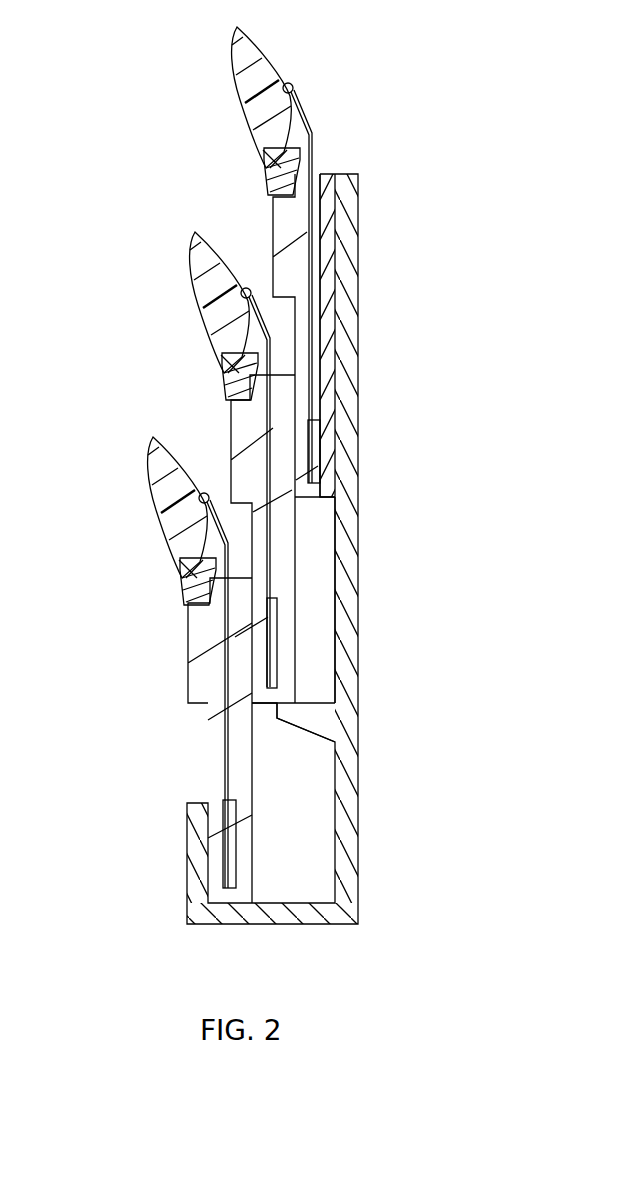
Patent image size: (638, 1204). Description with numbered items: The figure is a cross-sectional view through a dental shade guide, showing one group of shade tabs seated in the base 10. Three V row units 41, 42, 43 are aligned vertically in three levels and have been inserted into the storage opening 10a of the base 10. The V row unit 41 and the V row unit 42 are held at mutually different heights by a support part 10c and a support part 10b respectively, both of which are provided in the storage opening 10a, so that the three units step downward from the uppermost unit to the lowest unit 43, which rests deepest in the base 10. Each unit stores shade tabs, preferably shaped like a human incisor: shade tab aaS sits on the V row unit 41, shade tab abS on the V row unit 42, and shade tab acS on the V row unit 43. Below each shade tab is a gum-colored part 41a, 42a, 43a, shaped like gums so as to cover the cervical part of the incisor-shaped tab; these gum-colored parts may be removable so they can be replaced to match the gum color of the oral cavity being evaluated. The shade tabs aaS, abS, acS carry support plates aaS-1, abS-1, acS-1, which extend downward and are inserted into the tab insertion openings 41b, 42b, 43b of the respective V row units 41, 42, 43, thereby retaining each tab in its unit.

The base 10 is at (345, 770).
The storage opening 10a is at (310, 525).
The support part 10b is at (298, 714).
The support part 10c is at (322, 508).
The V row unit 41 is at (260, 228).
The gum-colored part 41a is at (265, 168).
The tab insertion opening 41b is at (320, 472).
The V row unit 42 is at (218, 433).
The gum-colored part 42a is at (222, 373).
The tab insertion opening 42b is at (276, 681).
The V row unit 43 is at (175, 636).
The gum-colored part 43a is at (180, 578).
The tab insertion opening 43b is at (227, 876).
The shade tab aaS is at (256, 80).
The support plate aaS-1 is at (314, 147).
The shade tab abS is at (213, 285).
The support plate abS-1 is at (278, 566).
The shade tab acS is at (171, 492).
The support plate acS-1 is at (226, 748).